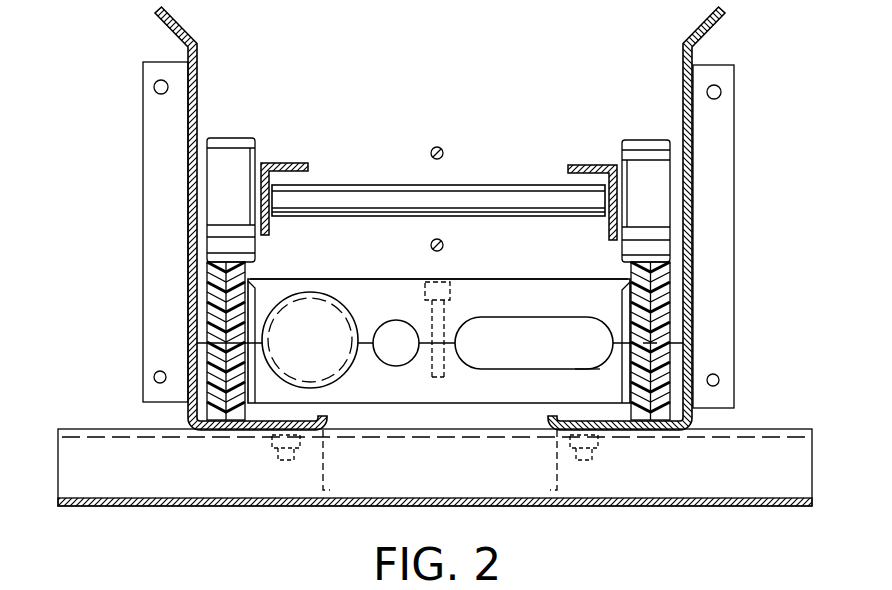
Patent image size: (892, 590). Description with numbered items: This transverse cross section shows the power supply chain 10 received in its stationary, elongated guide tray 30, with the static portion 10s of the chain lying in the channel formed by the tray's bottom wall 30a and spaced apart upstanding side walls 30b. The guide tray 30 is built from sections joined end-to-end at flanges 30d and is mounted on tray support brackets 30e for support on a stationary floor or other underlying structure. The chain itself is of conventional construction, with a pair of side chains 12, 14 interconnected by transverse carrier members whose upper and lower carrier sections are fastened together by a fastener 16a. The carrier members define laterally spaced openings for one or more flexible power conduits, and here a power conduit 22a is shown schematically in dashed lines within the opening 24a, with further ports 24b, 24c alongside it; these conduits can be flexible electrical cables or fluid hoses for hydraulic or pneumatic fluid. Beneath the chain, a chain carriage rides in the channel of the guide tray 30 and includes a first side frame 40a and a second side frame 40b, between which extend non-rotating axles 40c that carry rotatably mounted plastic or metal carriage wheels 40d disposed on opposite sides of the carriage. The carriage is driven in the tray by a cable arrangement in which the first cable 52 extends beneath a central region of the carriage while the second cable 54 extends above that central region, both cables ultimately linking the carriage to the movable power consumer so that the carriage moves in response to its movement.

The power supply chain 10 is at (385, 278).
The static portion 10s is at (411, 278).
The side chain 12 is at (235, 312).
The side chain 14 is at (663, 325).
The fastener 16a is at (445, 282).
The power conduit 22a is at (287, 350).
The opening 24a is at (277, 387).
The port 24b is at (383, 362).
The port 24c is at (587, 369).
The guide tray 30 is at (404, 247).
The bottom wall 30a is at (573, 440).
The side walls 30b is at (190, 183).
The flanges 30d is at (158, 147).
The tray support brackets 30e is at (97, 478).
The first side frame 40a is at (295, 160).
The second side frame 40b is at (590, 163).
The non-rotating axles 40c is at (338, 183).
The carriage wheels 40d is at (215, 212).
The first cable 52 is at (443, 240).
The second cable 54 is at (437, 147).